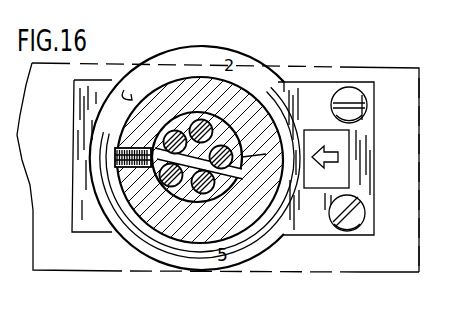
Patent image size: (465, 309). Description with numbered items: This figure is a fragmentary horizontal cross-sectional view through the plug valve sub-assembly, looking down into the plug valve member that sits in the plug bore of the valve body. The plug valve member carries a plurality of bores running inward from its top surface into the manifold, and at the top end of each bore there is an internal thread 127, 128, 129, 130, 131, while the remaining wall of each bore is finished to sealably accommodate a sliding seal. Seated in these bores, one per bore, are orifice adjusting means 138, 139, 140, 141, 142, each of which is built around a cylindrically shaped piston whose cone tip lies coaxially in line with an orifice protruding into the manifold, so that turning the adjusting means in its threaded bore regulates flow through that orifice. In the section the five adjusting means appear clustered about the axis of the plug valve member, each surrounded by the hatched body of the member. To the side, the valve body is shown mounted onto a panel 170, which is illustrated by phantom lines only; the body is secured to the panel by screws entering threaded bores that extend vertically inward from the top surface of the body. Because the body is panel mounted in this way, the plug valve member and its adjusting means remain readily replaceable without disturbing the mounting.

The internal thread 127 is at (302, 92).
The internal thread 128 is at (229, 90).
The internal thread 129 is at (173, 130).
The internal thread 130 is at (114, 174).
The internal thread 131 is at (224, 228).
The orifice adjusting means 138 is at (256, 110).
The orifice adjusting means 139 is at (201, 119).
The orifice adjusting means 140 is at (165, 135).
The orifice adjusting means 141 is at (110, 203).
The orifice adjusting means 142 is at (140, 240).
The panel 170 is at (409, 119).